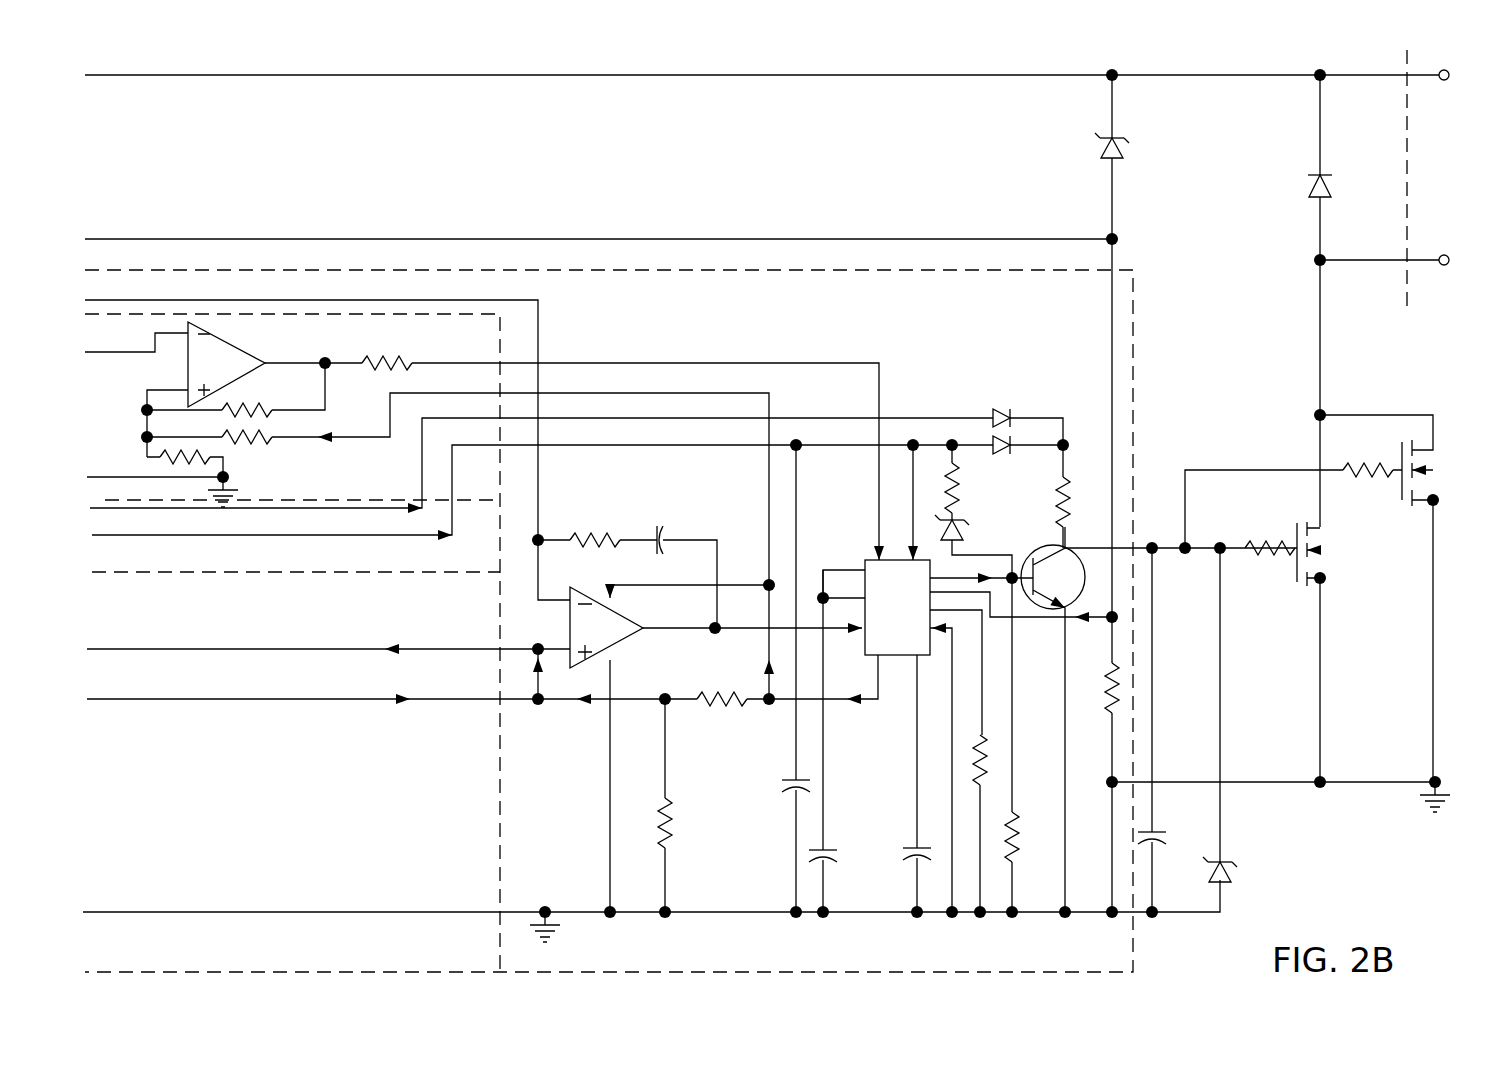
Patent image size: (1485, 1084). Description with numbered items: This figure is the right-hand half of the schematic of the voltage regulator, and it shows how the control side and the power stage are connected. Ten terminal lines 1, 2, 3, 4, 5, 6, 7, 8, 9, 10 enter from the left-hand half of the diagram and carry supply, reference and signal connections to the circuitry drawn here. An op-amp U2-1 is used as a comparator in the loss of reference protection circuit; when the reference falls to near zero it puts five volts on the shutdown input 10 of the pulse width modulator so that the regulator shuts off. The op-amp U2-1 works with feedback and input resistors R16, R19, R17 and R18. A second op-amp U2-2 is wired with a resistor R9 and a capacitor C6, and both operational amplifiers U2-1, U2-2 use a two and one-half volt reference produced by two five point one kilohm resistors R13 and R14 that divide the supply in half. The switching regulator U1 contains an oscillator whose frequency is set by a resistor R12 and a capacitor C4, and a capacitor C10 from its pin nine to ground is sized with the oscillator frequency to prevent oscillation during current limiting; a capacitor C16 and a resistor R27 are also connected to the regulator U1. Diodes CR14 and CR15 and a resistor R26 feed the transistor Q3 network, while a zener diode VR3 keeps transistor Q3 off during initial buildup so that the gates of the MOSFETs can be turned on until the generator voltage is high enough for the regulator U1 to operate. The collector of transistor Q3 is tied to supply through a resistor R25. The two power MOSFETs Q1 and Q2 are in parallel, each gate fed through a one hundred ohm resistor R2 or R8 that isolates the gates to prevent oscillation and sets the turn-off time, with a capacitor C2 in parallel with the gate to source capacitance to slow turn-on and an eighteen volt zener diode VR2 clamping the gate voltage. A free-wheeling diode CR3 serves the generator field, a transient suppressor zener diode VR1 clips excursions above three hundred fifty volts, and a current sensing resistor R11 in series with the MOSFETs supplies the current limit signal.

The terminal line 1 is at (770, 80).
The terminal line 2 is at (598, 226).
The terminal line 3 is at (324, 435).
The terminal line 4 is at (133, 338).
The terminal line 5 is at (160, 477).
The terminal line 6 is at (572, 465).
The terminal line 7 is at (575, 489).
The terminal line 8 (REF.) 8 is at (325, 637).
The terminal line 9 (V(f)) 9 is at (479, 677).
The shutdown input 10 is at (647, 911).
The op-amp U2-1 is at (251, 389).
The op-amp U2-2 is at (704, 738).
The switching regulator U1 is at (967, 678).
The resistor R16 is at (623, 443).
The resistor R19 is at (236, 390).
The resistor R17 is at (461, 546).
The resistor R18 is at (185, 467).
The resistor R9 is at (597, 525).
The capacitor C6 is at (681, 563).
The resistor R14 is at (684, 684).
The resistor R13 is at (692, 805).
The capacitor C16 is at (776, 678).
The capacitor C10 is at (845, 741).
The capacitor C4 is at (899, 783).
The resistor R12 is at (993, 823).
The resistor R27 is at (1037, 742).
The resistor R26 is at (978, 482).
The zener diode VR3 is at (979, 546).
The resistor R25 is at (1039, 496).
The diode CR14 is at (1004, 401).
The diode CR15 is at (1007, 458).
The transistor Q3 is at (1154, 717).
The resistor R11 is at (1094, 575).
The transient suppressor zener diode VR1 is at (1134, 157).
The free-wheeling diode CR3 is at (1387, 301).
The capacitor C2 is at (1170, 727).
The zener diode VR2 is at (1245, 715).
The resistor R2 is at (1237, 534).
The resistor R8 is at (1293, 490).
The power MOSFET Q1 is at (1308, 638).
The power MOSFET Q2 is at (1284, 611).